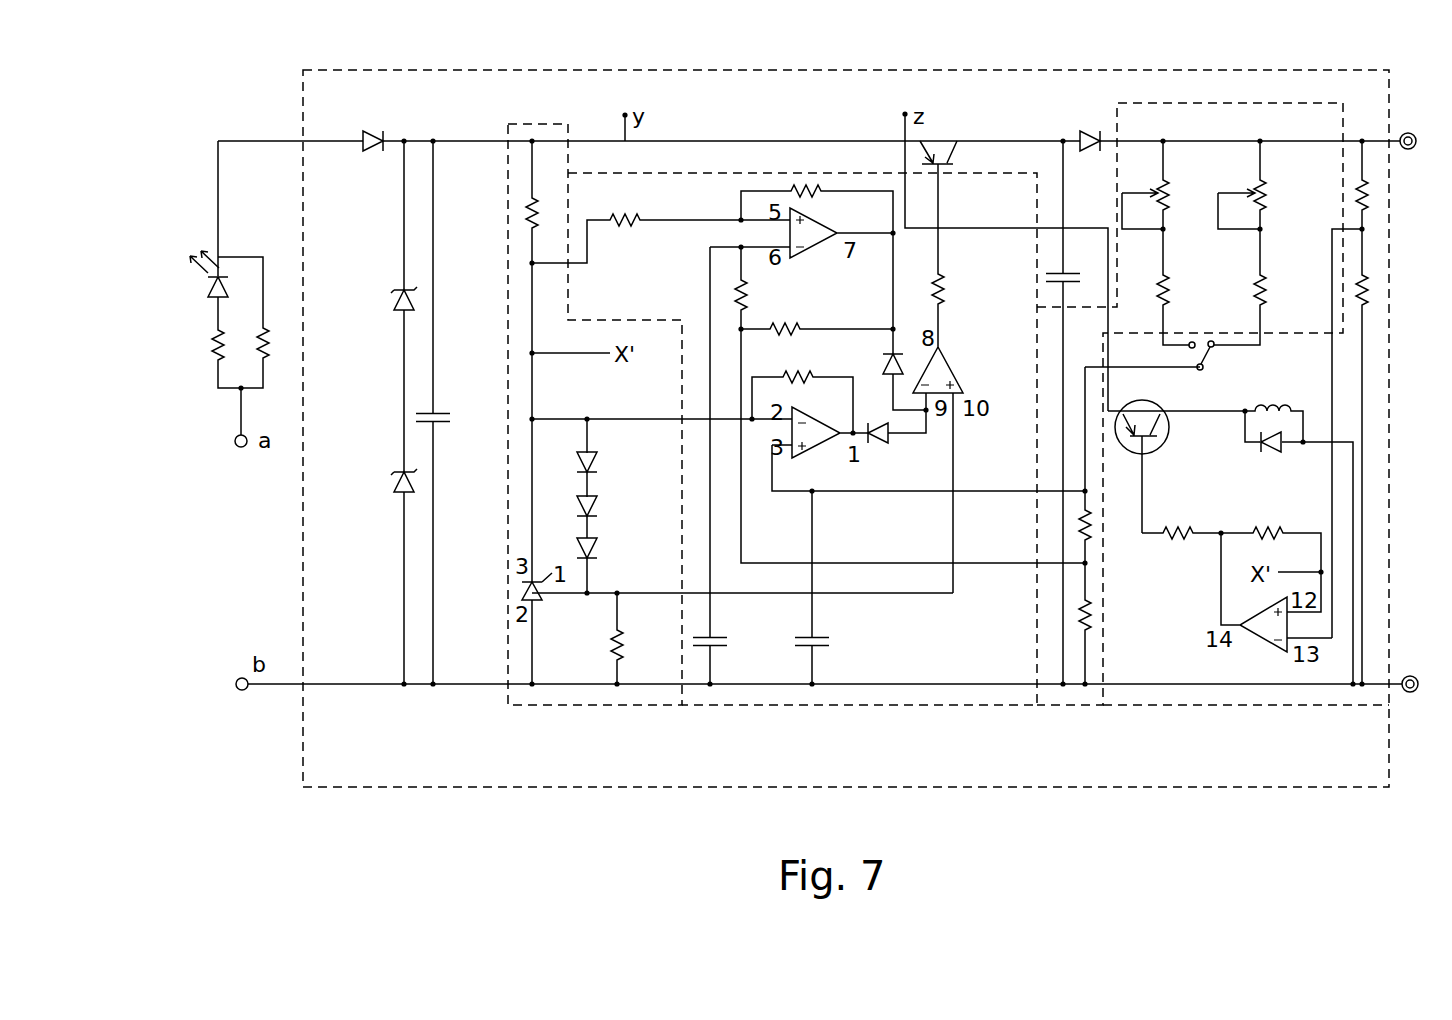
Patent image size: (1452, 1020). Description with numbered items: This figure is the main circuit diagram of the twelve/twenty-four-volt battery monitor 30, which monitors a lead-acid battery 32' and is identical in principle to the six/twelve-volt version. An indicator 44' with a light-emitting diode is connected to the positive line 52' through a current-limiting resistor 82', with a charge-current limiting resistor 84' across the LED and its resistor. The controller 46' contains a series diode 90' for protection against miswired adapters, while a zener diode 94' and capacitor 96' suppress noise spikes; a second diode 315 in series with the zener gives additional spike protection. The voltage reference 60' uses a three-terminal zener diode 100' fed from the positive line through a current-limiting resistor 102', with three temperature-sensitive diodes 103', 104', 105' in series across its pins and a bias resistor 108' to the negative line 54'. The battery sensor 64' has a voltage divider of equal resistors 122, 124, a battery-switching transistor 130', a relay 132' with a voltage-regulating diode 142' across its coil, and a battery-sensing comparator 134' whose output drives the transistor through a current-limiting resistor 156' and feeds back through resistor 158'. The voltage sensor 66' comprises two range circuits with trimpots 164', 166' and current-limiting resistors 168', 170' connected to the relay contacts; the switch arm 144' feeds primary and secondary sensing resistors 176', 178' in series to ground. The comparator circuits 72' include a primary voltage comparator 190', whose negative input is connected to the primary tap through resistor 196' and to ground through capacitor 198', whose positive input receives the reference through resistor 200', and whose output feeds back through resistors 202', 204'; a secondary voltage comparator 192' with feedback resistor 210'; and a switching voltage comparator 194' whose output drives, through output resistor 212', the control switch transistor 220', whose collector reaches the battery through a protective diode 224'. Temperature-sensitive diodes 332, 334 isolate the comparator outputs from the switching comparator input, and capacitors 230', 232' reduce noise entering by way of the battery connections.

The battery monitor 30 is at (271, 70).
The battery 32' is at (1412, 360).
The indicator 44' is at (205, 266).
The controller 46' is at (846, 410).
The positive line 52' is at (781, 277).
The negative line 54' is at (819, 427).
The voltage reference 60' is at (601, 475).
The battery sensor 64' is at (1246, 765).
The voltage sensor 66' is at (1190, 464).
The comparator circuits 72' is at (802, 499).
The current-limiting resistor 82' is at (186, 364).
The charge-current limiting resistor 84' is at (307, 318).
The series diode 90' is at (350, 165).
The zener diode 94' is at (367, 306).
The capacitor 96' is at (456, 414).
The three-terminal zener diode 100' is at (497, 630).
The current-limiting resistor 102' is at (489, 361).
The temperature-sensitive diode 103' is at (623, 447).
The temperature-sensitive diode 104' is at (623, 495).
The temperature-sensitive diode 105' is at (623, 554).
The bias resistor 108' is at (580, 640).
The resistor 122 is at (1365, 207).
The resistor 124 is at (1367, 297).
The battery-switching transistor 130' is at (1176, 466).
The relay 132' is at (1253, 405).
The battery-sensing comparator 134' is at (1258, 607).
The voltage-regulating diode 142' is at (1264, 549).
The switch arm 144' is at (1254, 357).
The current-limiting resistor 156' is at (1178, 553).
The feedback resistor 158' is at (1259, 549).
The trimpot 164' is at (1276, 206).
The trimpot 166' is at (1180, 206).
The current-limiting resistor 168' is at (1207, 289).
The current-limiting resistor 170' is at (1215, 308).
The primary sensing resistor 176' is at (1027, 625).
The secondary sensing resistor 178' is at (1081, 465).
The primary voltage comparator 190' is at (803, 249).
The secondary voltage comparator 192' is at (920, 450).
The switching voltage comparator 194' is at (966, 450).
The resistor 196' is at (861, 406).
The capacitor 198' is at (742, 467).
The resistor 200' is at (661, 246).
The resistor 202' is at (817, 188).
The resistor 204' is at (816, 284).
The feedback resistor 210' is at (729, 402).
The output resistor 212' is at (976, 235).
The transistor 220' is at (982, 157).
The diode 224' is at (1048, 118).
The capacitor 230' is at (1020, 412).
The capacitor 232' is at (846, 589).
The second diode 315 is at (404, 493).
The temperature-sensitive diode 332 is at (885, 368).
The temperature-sensitive diode 334 is at (880, 444).